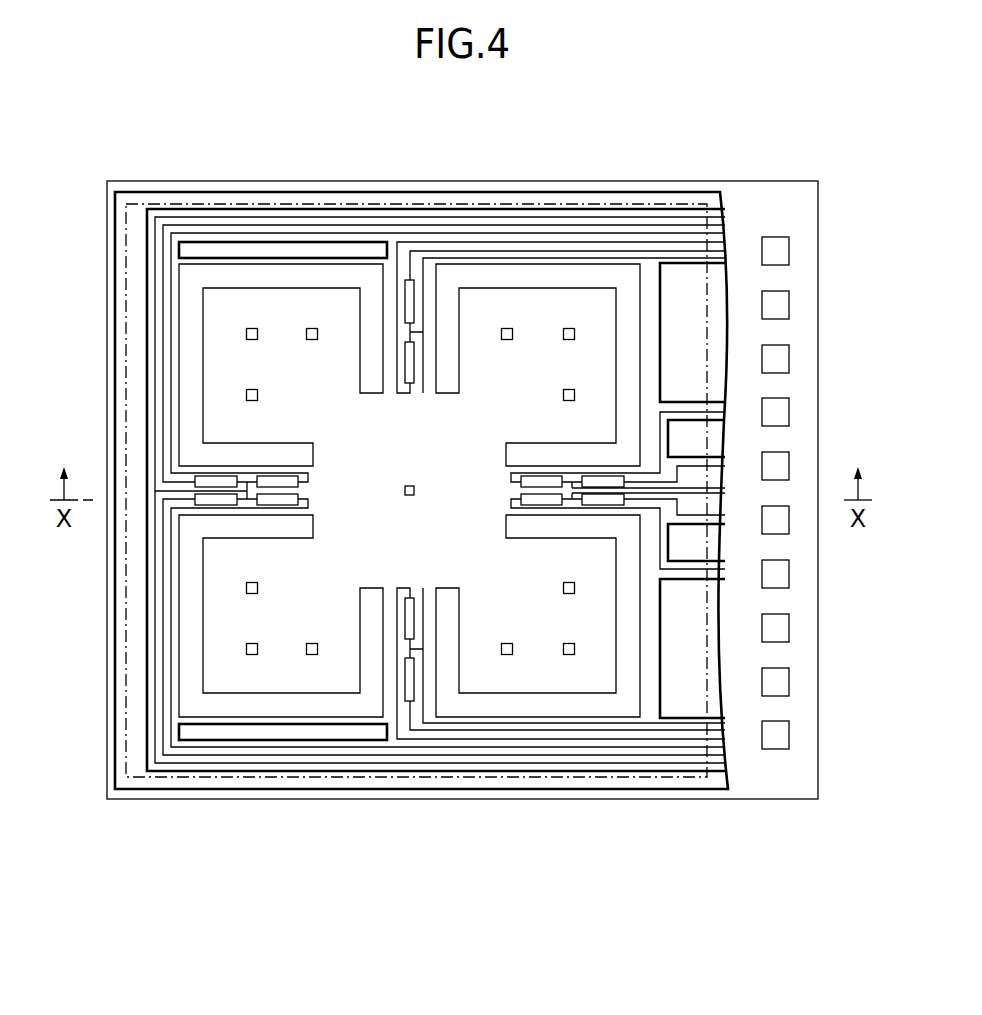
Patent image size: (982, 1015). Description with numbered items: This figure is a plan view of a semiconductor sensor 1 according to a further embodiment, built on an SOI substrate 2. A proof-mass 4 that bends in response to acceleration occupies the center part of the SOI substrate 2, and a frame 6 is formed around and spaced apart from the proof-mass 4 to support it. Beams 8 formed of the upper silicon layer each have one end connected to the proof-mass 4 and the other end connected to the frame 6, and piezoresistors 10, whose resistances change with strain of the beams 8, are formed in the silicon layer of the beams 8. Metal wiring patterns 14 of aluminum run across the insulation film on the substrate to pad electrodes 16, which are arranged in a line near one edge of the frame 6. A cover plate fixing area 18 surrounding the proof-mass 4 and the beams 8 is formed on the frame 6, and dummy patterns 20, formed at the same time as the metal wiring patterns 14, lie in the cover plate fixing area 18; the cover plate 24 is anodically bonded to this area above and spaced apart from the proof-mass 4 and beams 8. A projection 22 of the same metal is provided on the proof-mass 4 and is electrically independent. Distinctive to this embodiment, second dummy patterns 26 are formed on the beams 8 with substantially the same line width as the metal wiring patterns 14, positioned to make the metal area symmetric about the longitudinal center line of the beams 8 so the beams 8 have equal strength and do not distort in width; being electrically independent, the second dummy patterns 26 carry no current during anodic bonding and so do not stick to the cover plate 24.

The semiconductor sensor 1 is at (832, 178).
The SOI substrate 2 is at (768, 181).
The proof-mass 4 is at (470, 443).
The frame 6 is at (817, 480).
The beams 8 is at (387, 343).
The piezoresistors 10 is at (605, 482).
The metal wiring patterns 14 is at (508, 258).
The pad electrodes 16 is at (780, 305).
The cover plate fixing area 18 is at (126, 175).
The dummy patterns 20 is at (685, 292).
The projection 22 is at (312, 328).
The cover plate 24 is at (307, 203).
The second dummy patterns 26 is at (423, 357).